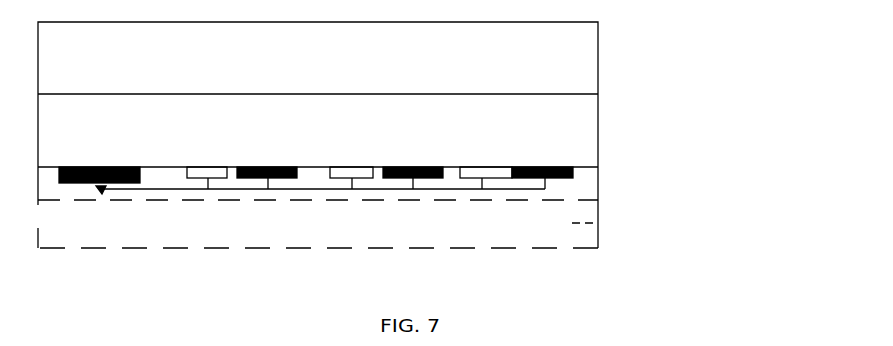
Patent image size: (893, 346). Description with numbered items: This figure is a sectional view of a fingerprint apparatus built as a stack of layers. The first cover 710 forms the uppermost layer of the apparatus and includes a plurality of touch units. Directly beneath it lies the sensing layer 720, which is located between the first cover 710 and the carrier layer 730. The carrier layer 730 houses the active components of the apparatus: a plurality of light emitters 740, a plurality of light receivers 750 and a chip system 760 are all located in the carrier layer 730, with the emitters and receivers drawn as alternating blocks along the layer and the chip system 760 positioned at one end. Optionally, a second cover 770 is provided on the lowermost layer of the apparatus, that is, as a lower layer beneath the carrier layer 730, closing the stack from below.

The first cover 710 is at (560, 60).
The sensing layer 720 is at (563, 128).
The carrier layer 730 is at (661, 182).
The second cover 770 is at (661, 223).
The chip system 760 is at (83, 183).
The light emitters 740 is at (212, 178).
The light receivers 750 is at (278, 177).